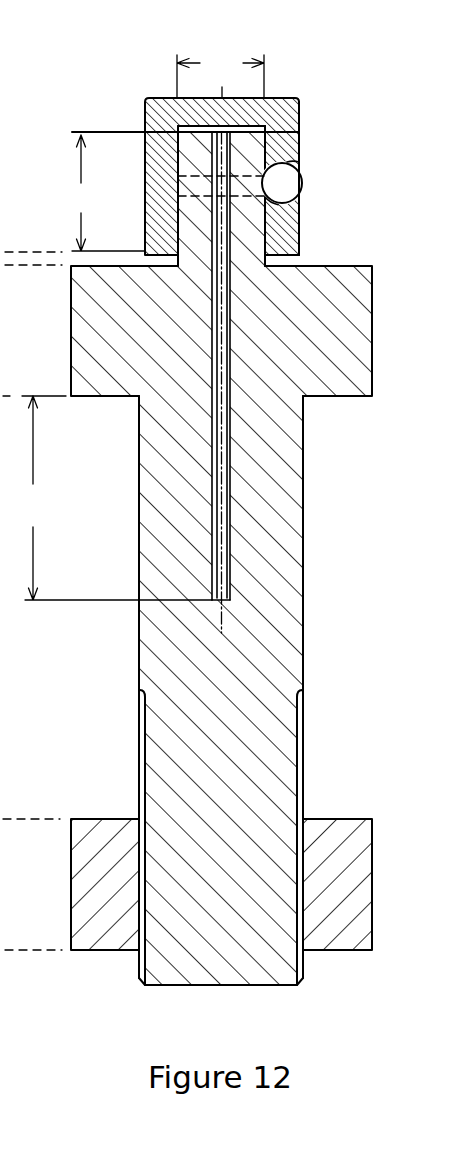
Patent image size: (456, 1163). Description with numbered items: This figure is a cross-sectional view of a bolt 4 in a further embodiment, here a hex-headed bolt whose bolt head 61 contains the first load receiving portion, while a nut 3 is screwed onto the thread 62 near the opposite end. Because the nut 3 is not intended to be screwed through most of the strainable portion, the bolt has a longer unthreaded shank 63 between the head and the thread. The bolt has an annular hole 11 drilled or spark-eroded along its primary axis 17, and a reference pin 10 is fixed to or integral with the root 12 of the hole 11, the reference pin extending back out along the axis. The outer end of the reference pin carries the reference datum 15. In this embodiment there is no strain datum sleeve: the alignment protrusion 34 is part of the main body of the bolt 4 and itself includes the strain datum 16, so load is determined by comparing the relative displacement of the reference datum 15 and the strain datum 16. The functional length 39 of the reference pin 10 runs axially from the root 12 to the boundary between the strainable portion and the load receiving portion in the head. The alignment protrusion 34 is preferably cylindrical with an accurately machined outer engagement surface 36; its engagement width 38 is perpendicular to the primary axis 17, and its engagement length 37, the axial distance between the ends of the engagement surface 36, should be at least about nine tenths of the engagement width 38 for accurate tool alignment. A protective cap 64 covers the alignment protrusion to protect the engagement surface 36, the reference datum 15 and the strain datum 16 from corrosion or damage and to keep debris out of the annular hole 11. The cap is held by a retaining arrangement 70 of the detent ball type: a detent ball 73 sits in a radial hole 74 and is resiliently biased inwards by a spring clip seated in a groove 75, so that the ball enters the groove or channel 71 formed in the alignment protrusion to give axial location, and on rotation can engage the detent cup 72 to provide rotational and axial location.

The nut 3 is at (92, 825).
The bolt 4 is at (165, 972).
The reference pin 10 is at (218, 503).
The annular hole 11 is at (212, 557).
The root of the hole 12 is at (213, 602).
The reference datum 15 is at (233, 130).
The strain datum 16 is at (207, 130).
The primary axis 17 is at (222, 620).
The alignment protrusion 34 is at (300, 110).
The engagement surface 36 is at (178, 172).
The engagement length 37 is at (105, 193).
The engagement width 38 is at (220, 75).
The functional length 39 is at (116, 498).
The bolt head 61 is at (112, 387).
The thread 62 is at (145, 742).
The unthreaded shank 63 is at (303, 490).
The protective cap 64 is at (288, 242).
The retaining arrangement 70 is at (340, 176).
The groove or channel 71 is at (197, 197).
The detent cup 72 is at (285, 222).
The detent ball 73 is at (288, 188).
The radial hole 74 is at (298, 166).
The groove 75 is at (300, 168).